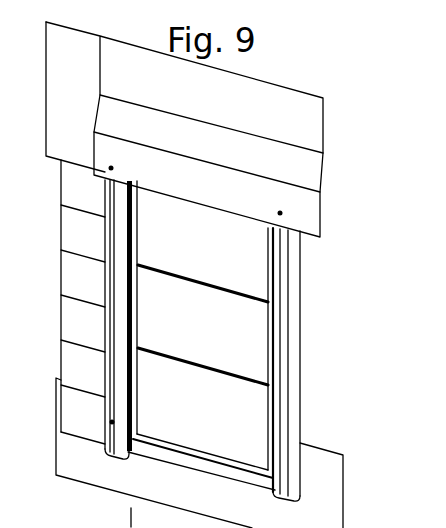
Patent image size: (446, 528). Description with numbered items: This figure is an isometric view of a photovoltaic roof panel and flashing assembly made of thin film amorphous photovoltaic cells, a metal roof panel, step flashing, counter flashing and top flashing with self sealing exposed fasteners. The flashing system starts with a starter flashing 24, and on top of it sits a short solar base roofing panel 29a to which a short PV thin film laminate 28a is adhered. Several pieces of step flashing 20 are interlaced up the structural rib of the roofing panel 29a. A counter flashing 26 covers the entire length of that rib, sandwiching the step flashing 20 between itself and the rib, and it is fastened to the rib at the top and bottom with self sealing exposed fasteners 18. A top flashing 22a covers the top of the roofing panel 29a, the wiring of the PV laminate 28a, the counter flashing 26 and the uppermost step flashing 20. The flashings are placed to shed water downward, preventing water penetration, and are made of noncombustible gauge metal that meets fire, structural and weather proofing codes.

The self sealing exposed fastener 18 is at (111, 168).
The step flashing 20 is at (75, 192).
The top flashing 22a is at (248, 88).
The starter flashing 24 is at (322, 478).
The counter flashing 26 is at (115, 240).
The short PV thin film laminate 28a is at (212, 325).
The short solar base roofing panel 29a is at (302, 383).